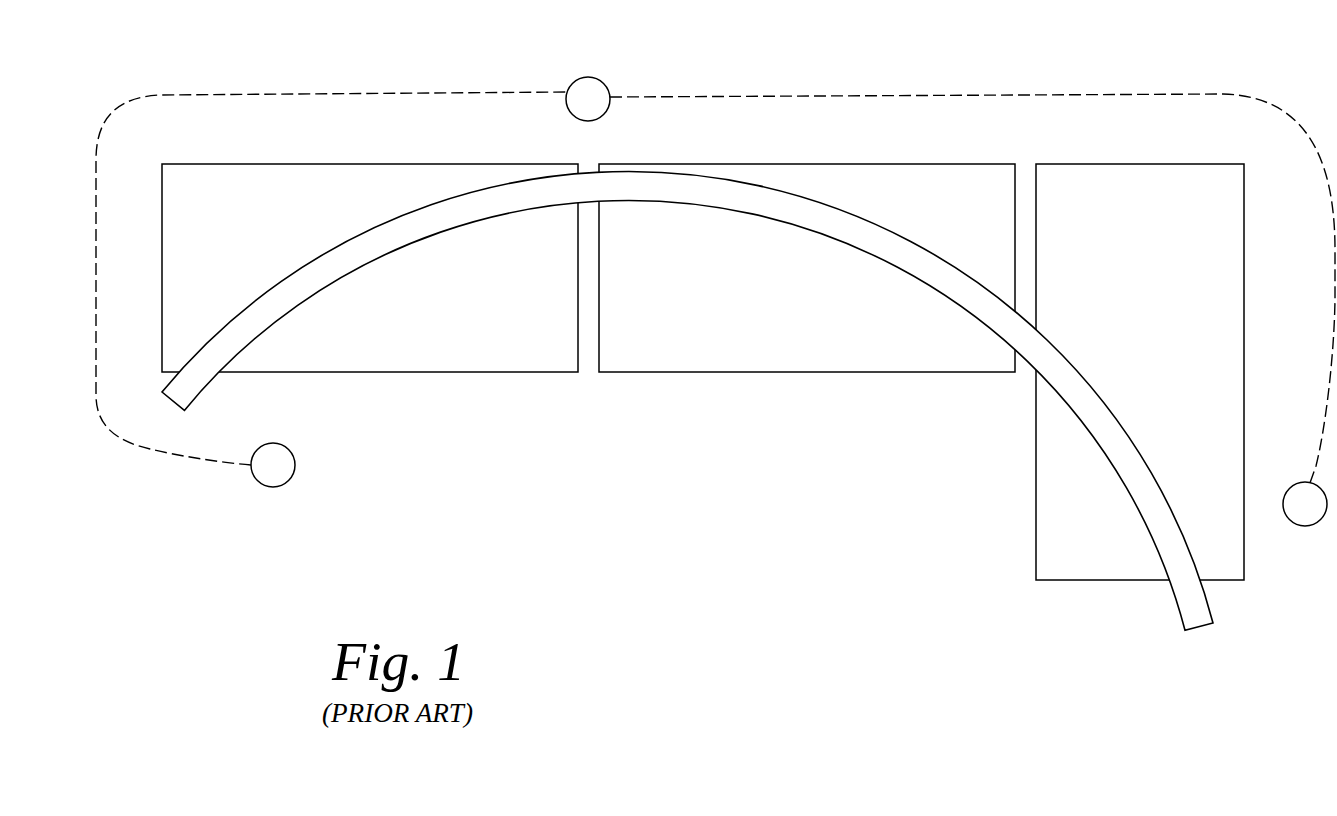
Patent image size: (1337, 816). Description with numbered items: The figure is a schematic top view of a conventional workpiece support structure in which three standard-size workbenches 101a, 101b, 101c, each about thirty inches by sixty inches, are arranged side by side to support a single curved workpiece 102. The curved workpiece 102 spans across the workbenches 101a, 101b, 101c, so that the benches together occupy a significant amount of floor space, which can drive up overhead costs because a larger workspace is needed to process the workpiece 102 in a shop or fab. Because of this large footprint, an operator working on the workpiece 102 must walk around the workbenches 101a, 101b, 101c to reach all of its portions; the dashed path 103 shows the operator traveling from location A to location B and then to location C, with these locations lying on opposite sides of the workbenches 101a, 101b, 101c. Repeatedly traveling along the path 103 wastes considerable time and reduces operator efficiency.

The workbench 101a is at (302, 164).
The workbench 101b is at (742, 164).
The workbench 101c is at (1075, 164).
The curved workpiece 102 is at (893, 232).
The path 103 is at (160, 95).